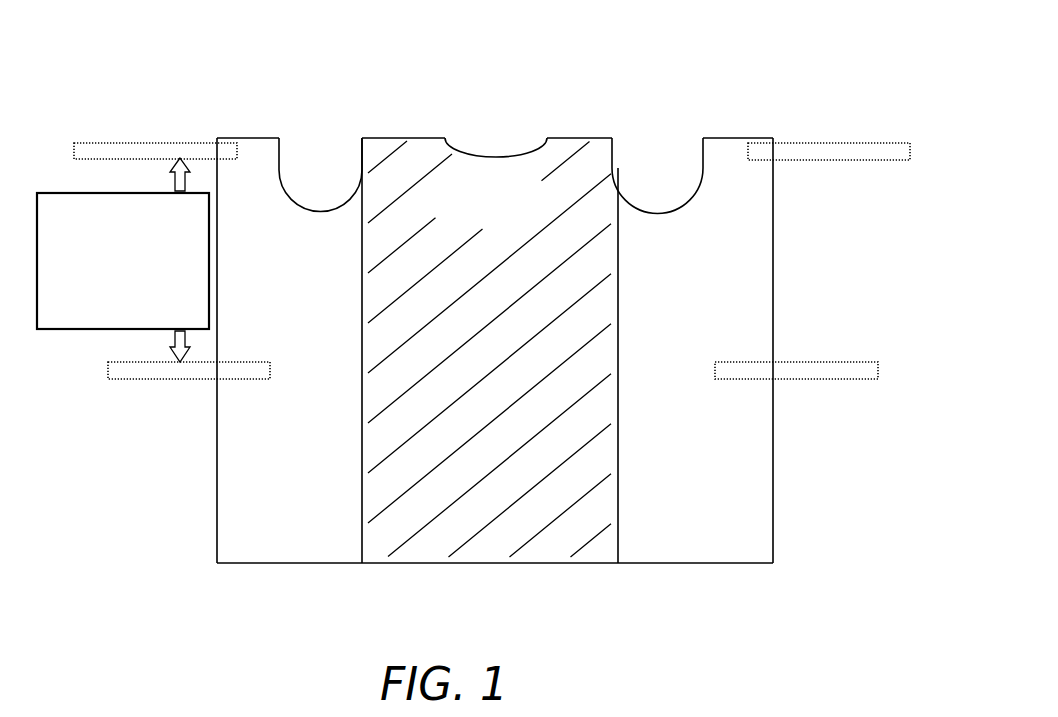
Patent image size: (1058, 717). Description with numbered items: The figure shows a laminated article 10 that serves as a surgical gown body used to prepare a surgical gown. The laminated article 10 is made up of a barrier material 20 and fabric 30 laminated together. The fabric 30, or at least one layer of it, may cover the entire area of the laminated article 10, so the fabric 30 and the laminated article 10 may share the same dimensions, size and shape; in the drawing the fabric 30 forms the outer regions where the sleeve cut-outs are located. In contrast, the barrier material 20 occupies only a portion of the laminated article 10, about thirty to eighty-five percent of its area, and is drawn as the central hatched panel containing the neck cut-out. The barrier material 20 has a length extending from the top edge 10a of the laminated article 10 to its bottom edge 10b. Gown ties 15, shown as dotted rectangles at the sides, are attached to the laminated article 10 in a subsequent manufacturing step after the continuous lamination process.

The laminated article 10 is at (792, 89).
The top edge of the laminated article 10a is at (562, 137).
The bottom edge of the laminated article 10b is at (530, 565).
The gown ties 15 is at (137, 148).
The barrier material 20 is at (411, 185).
The fabric 30 is at (257, 207).